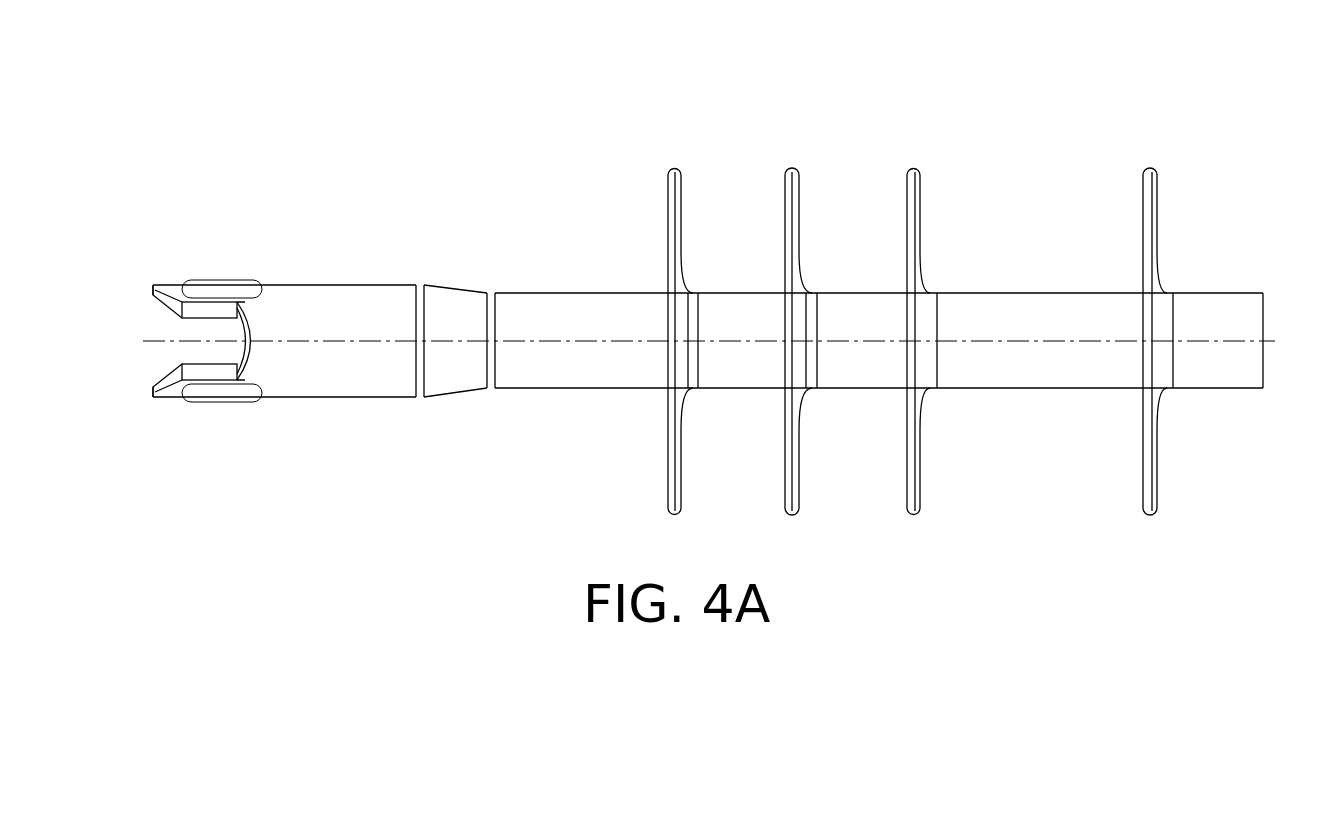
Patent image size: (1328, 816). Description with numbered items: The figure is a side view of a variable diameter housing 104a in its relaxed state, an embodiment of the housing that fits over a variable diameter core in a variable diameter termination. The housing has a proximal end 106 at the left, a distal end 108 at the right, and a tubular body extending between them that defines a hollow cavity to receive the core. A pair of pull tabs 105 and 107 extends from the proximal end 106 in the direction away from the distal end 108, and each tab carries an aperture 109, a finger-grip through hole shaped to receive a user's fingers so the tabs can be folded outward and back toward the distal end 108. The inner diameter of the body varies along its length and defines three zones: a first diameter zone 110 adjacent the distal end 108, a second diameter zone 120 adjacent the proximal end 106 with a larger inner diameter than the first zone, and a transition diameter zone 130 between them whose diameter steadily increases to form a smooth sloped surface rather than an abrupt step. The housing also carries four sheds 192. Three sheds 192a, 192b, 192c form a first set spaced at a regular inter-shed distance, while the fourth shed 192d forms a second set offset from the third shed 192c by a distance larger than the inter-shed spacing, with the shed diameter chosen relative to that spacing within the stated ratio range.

The variable diameter housing 104a is at (193, 455).
The pull tab 105 is at (163, 296).
The proximal end 106 is at (272, 425).
The pull tab 107 is at (163, 387).
The distal end 108 is at (1263, 388).
The aperture 109 is at (214, 287).
The first diameter zone 110 is at (1032, 305).
The second diameter zone 120 is at (322, 298).
The transition diameter zone 130 is at (456, 306).
The sheds 192 is at (848, 281).
The first shed 192a is at (680, 222).
The second shed 192b is at (797, 207).
The third shed 192c is at (920, 175).
The fourth shed 192d is at (1143, 200).